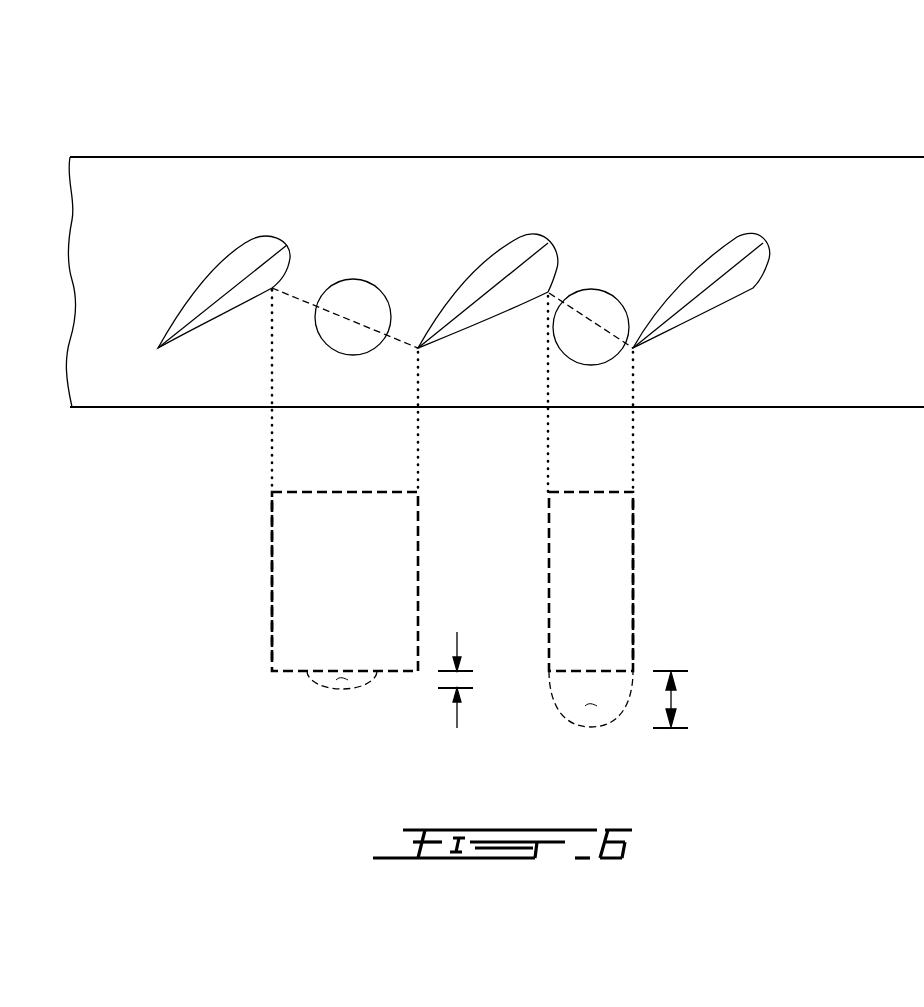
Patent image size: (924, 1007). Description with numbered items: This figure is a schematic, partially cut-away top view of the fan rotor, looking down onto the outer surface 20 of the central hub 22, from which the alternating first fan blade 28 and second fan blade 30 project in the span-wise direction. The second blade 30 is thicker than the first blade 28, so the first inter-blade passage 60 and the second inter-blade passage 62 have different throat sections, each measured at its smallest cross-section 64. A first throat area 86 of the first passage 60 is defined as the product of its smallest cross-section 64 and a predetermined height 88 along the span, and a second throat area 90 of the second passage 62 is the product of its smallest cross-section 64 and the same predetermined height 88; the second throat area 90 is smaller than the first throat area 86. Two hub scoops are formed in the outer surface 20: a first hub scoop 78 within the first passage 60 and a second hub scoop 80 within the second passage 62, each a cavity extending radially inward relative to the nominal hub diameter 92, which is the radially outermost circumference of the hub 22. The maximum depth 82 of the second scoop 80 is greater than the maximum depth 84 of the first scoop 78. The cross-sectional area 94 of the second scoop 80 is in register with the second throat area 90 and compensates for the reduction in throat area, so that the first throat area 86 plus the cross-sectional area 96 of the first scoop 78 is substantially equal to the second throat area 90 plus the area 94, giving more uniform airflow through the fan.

The outer surface 20 is at (478, 211).
The central hub 22 is at (818, 157).
The first fan blade 28 is at (236, 247).
The second fan blade 30 is at (522, 237).
The first inter-blade passage 60 is at (413, 311).
The second inter-blade passage 62 is at (639, 300).
The smallest cross-section 64 is at (302, 300).
The first hub scoop 78 is at (353, 278).
The second hub scoop 80 is at (630, 323).
The maximum depth of the second scoop 82 is at (672, 700).
The maximum depth of the first scoop 84 is at (446, 681).
The first throat area 86 is at (363, 589).
The predetermined height 88 is at (272, 590).
The second throat area 90 is at (613, 589).
The hub diameter 92 is at (888, 378).
The cross-sectional area of the second scoop 94 is at (591, 708).
The cross-sectional area of the first scoop 96 is at (341, 677).